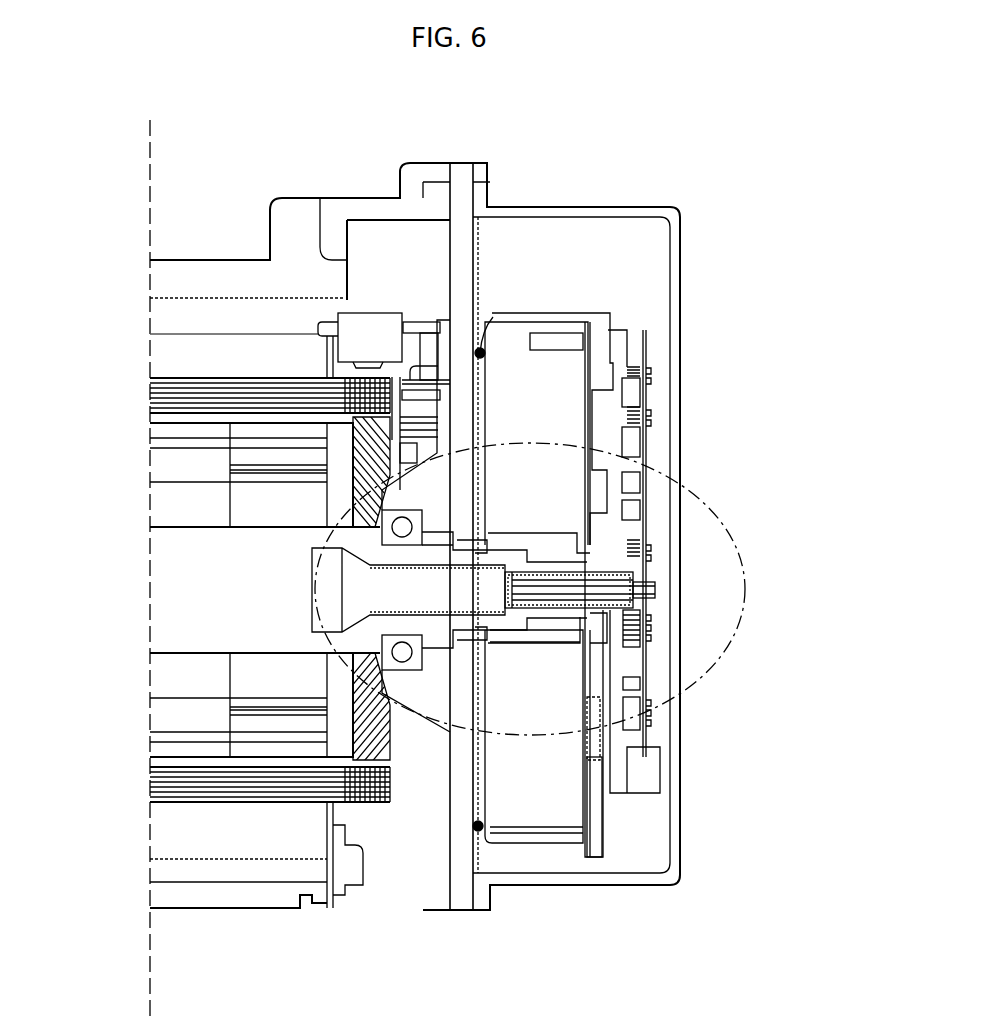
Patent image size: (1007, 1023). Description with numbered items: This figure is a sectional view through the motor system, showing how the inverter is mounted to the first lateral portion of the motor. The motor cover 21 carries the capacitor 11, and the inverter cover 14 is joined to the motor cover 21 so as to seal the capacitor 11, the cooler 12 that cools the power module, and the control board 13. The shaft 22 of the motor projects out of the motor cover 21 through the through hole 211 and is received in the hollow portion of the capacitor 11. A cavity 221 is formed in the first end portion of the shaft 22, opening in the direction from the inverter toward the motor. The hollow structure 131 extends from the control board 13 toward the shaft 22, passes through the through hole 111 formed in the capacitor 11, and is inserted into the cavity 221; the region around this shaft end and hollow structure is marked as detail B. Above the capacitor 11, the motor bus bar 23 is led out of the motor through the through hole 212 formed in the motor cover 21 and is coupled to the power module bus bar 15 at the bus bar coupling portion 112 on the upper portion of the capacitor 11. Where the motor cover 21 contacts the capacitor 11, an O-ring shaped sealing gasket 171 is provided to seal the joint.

The capacitor 11 is at (560, 320).
The through hole 111 is at (560, 540).
The bus bar coupling portion 112 is at (555, 385).
The cooler 12 is at (617, 440).
The control board 13 is at (645, 527).
The hollow structure 131 is at (617, 602).
The inverter cover 14 is at (682, 340).
The bus bar 15 is at (597, 320).
The sealing gasket 171 is at (481, 350).
The motor cover 21 is at (463, 895).
The through hole 211 is at (440, 640).
The through hole 212 is at (460, 300).
The shaft 22 is at (480, 623).
The cavity 221 is at (425, 593).
The motor bus bar 23 is at (423, 310).
The detail region B is at (745, 590).